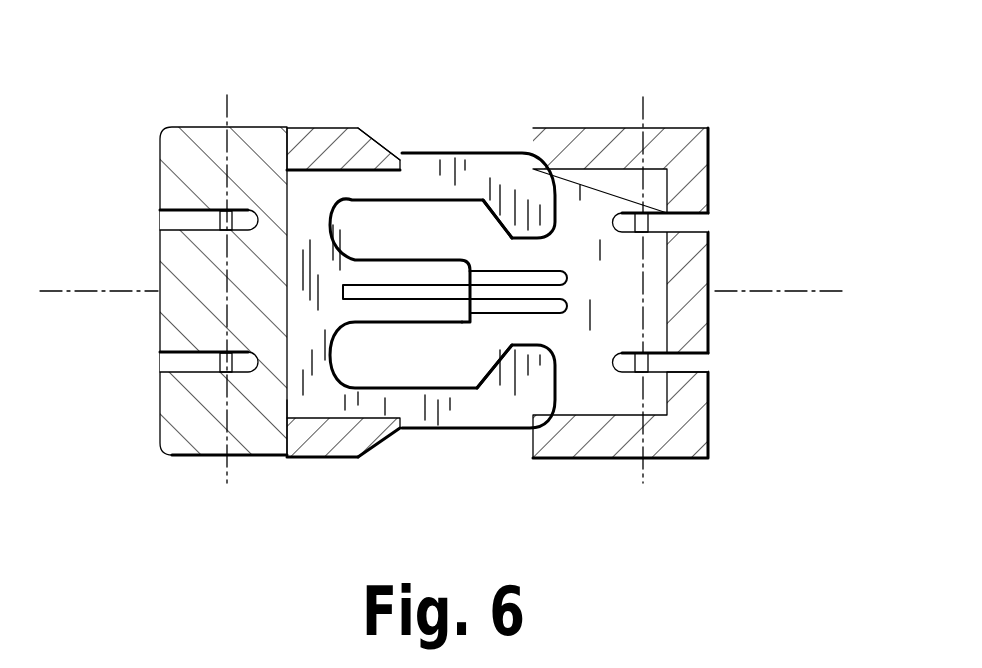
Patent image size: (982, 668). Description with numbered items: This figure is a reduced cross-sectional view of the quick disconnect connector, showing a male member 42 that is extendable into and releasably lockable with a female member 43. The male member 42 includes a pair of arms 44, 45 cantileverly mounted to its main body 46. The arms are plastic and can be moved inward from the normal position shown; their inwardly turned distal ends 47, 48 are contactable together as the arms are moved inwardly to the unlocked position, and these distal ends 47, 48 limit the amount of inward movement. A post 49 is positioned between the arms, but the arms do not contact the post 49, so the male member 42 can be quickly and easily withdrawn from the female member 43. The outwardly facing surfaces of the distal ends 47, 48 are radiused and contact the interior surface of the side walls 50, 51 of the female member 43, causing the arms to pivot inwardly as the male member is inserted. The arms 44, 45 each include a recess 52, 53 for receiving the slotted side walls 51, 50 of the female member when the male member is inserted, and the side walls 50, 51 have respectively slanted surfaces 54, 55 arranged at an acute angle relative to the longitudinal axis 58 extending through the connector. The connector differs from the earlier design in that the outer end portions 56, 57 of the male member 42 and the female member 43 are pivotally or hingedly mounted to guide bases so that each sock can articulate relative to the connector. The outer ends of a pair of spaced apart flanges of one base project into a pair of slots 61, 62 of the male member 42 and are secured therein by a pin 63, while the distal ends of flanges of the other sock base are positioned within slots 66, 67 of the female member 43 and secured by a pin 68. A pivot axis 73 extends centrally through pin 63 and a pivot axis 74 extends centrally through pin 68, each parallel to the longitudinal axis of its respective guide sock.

The male member 42 is at (307, 212).
The female member 43 is at (600, 190).
The arm 44 is at (445, 168).
The arm 45 is at (462, 418).
The main body 46 is at (313, 322).
The distal end 47 is at (520, 215).
The distal end 48 is at (510, 360).
The post 49 is at (433, 270).
The side wall 50 is at (320, 140).
The side wall 51 is at (323, 445).
The recess 52 is at (322, 412).
The recess 53 is at (335, 160).
The slanted surface 54 is at (385, 447).
The slanted surface 55 is at (392, 155).
The outer end portion 56 is at (168, 140).
The outer end portion 57 is at (690, 150).
The longitudinal axis 58 is at (818, 291).
The slot 61 is at (148, 217).
The slot 62 is at (150, 368).
The pin 63 is at (220, 227).
The slot 66 is at (718, 219).
The slot 67 is at (710, 368).
The pin 68 is at (708, 357).
The pivot axis 73 is at (225, 480).
The pivot axis 74 is at (643, 483).